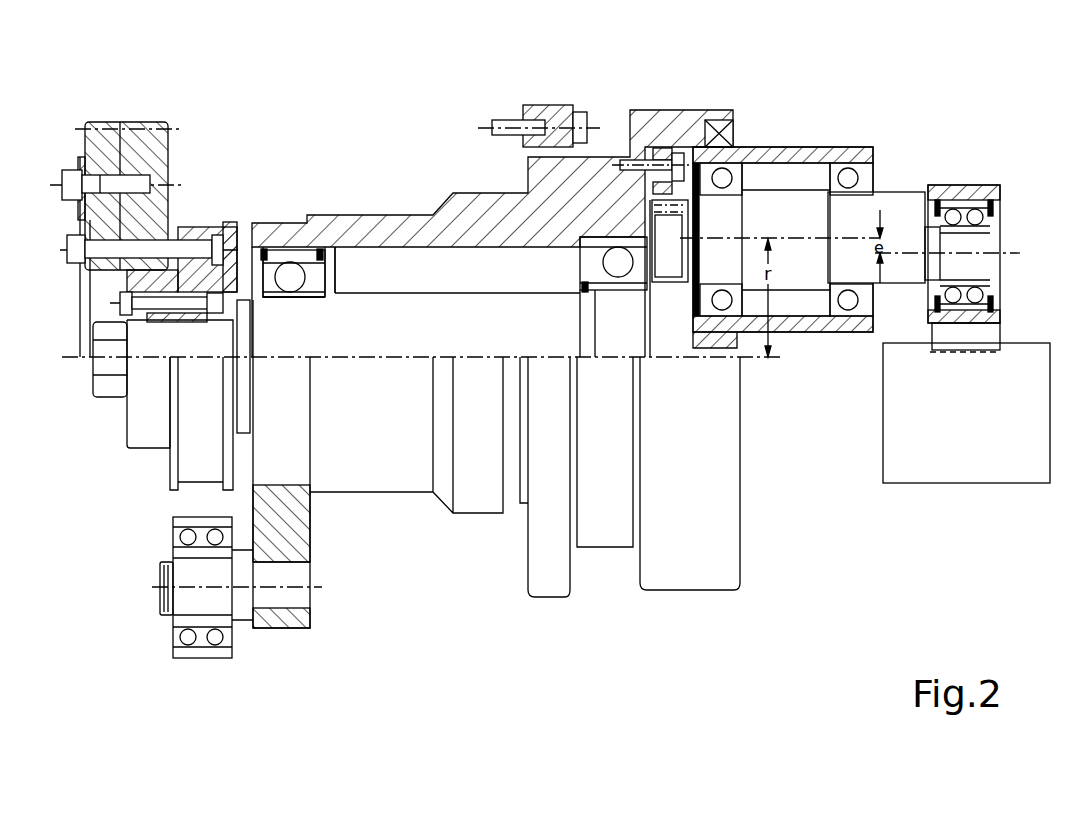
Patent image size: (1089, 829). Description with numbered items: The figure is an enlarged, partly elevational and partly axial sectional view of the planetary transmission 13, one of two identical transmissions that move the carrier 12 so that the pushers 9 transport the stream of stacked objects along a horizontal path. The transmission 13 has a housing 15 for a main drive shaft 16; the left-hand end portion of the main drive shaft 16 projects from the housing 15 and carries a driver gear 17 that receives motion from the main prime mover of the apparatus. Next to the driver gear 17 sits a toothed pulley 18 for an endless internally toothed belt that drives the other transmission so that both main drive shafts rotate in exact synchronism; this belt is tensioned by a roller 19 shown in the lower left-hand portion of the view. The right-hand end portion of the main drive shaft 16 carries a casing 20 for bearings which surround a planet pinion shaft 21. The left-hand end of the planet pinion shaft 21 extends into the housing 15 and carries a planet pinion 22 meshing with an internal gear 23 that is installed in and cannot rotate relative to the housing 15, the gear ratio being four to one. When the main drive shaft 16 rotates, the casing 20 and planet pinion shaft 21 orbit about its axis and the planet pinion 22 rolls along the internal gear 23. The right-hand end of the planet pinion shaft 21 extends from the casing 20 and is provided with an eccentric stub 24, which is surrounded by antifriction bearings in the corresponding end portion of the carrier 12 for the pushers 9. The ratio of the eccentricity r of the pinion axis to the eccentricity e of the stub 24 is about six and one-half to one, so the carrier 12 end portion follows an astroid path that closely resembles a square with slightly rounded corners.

The pusher 9 is at (1030, 410).
The carrier 12 is at (998, 330).
The planetary transmission 13 is at (816, 115).
The housing 15 is at (350, 215).
The main drive shaft 16 is at (410, 305).
The driver gear 17 is at (146, 122).
The toothed pulley 18 is at (228, 222).
The roller 19 is at (208, 650).
The casing 20 is at (846, 150).
The planet pinion shaft 21 is at (906, 195).
The planet pinion 22 is at (667, 262).
The internal gear 23 is at (620, 182).
The eccentric stub 24 is at (972, 243).